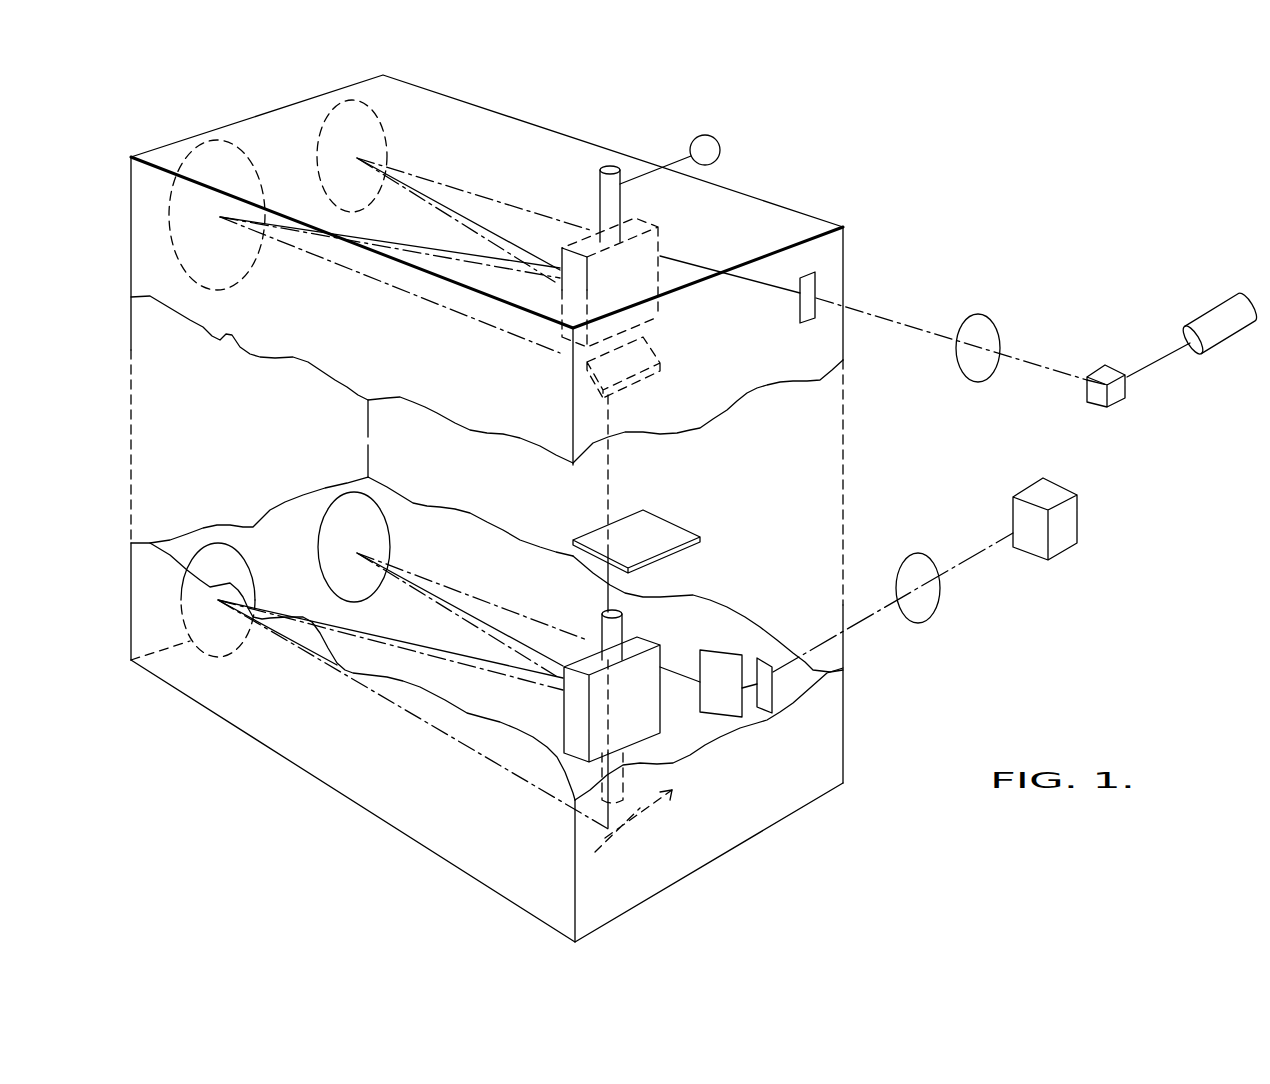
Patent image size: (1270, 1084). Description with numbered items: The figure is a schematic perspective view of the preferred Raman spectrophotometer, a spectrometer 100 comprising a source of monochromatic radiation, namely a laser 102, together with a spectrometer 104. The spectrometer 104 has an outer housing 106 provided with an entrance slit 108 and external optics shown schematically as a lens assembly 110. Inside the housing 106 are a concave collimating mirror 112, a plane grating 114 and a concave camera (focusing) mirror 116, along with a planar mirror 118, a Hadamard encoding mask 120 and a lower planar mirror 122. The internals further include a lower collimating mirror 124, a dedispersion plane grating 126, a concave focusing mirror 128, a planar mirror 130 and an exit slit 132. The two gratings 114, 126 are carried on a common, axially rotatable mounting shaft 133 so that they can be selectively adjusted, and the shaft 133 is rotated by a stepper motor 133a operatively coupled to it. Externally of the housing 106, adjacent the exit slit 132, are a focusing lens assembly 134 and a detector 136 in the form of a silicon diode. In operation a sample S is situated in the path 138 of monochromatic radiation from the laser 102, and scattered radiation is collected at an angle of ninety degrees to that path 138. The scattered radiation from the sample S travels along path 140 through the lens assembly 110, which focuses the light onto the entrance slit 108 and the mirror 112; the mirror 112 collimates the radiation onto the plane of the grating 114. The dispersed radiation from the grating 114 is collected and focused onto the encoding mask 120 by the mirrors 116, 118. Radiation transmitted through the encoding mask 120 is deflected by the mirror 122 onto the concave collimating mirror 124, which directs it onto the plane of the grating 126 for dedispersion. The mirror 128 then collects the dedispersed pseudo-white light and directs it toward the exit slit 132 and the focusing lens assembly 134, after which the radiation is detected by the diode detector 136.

The spectrometer 100 is at (1190, 93).
The laser 102 is at (1238, 298).
The spectrometer 104 is at (963, 120).
The outer housing 106 is at (816, 172).
The entrance slit 108 is at (800, 312).
The lens assembly 110 is at (1001, 329).
The concave collimating mirror 112 is at (428, 130).
The plane grating 114 is at (658, 243).
The concave camera (focusing) mirror 116 is at (276, 152).
The planar mirror 118 is at (700, 362).
The Hadamard encoding mask 120 is at (683, 525).
The lower planar mirror 122 is at (665, 810).
The lower collimating mirror 124 is at (280, 560).
The dedispersion plane grating 126 is at (657, 658).
The concave focusing mirror 128 is at (427, 537).
The planar mirror 130 is at (745, 652).
The exit slit 132 is at (775, 695).
The mounting shaft 133 is at (598, 200).
The stepper motor 133a is at (722, 150).
The focusing lens assembly 134 is at (935, 558).
The detector 136 is at (1070, 518).
The path 138 is at (1165, 355).
The path 140 is at (1050, 375).
The sample S is at (1113, 365).